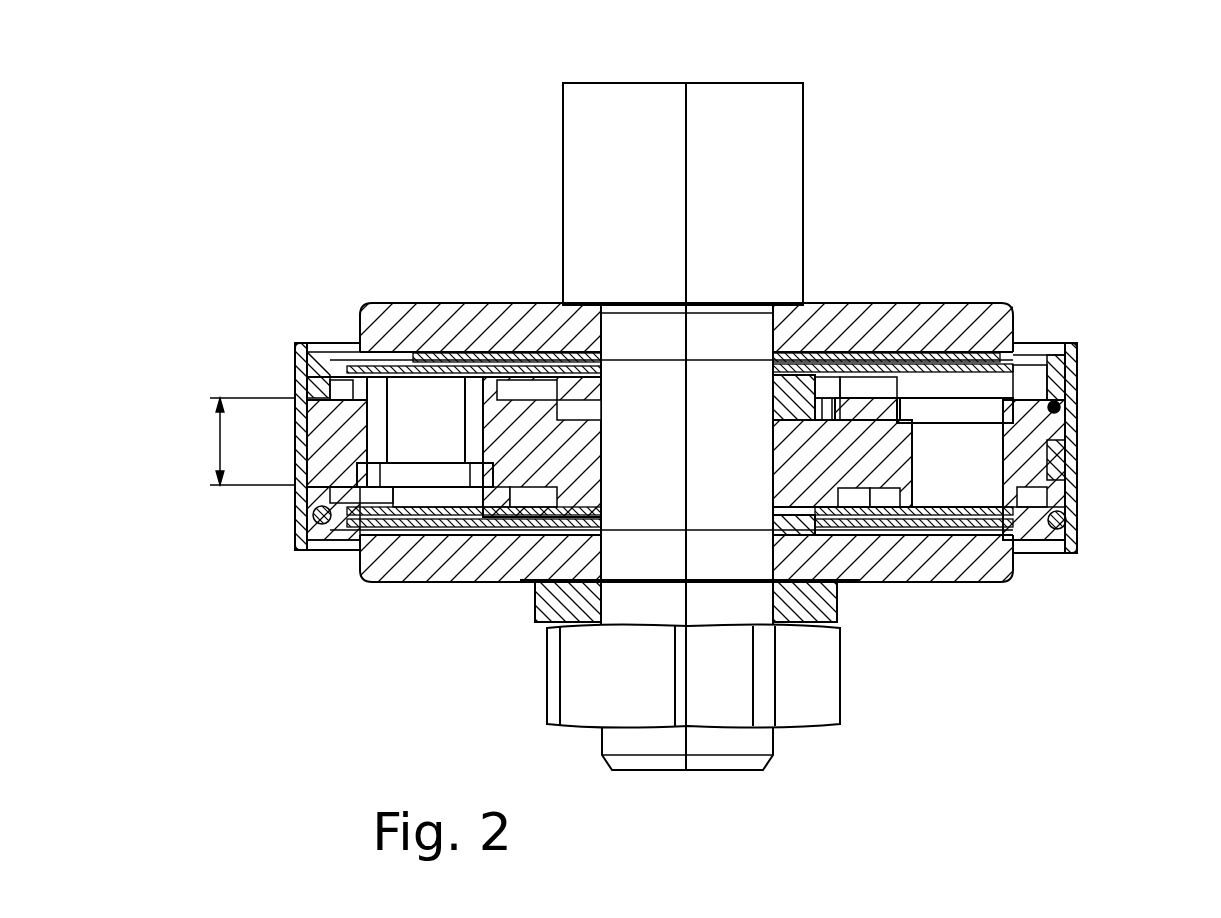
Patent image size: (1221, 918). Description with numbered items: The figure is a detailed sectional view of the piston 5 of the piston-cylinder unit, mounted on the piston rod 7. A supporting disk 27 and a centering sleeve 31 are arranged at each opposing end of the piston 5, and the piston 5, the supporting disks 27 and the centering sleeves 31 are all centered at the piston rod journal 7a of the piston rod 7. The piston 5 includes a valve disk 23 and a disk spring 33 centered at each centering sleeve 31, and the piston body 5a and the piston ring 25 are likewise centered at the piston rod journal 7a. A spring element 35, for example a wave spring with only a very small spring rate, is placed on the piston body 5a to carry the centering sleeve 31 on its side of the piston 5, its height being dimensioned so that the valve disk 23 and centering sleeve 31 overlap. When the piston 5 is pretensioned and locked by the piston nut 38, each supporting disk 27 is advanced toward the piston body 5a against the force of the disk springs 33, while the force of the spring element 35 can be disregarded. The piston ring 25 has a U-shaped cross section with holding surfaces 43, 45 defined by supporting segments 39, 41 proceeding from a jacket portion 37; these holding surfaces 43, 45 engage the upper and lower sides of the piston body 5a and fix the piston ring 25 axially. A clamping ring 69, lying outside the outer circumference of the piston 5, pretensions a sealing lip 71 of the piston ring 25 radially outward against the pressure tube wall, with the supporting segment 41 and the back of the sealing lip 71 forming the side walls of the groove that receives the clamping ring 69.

The piston 5 is at (360, 689).
The piston body 5a is at (523, 457).
The piston rod 7 is at (750, 112).
The piston rod journal 7a is at (627, 603).
The valve disk 23 is at (1030, 362).
The piston ring 25 is at (1106, 433).
The supporting disk 27 is at (980, 325).
The centering sleeve 31 is at (808, 362).
The disk spring 33 is at (445, 360).
The spring element 35 is at (517, 580).
The jacket portion 37 is at (215, 446).
The piston nut 38 is at (827, 696).
The supporting segment 39 is at (293, 345).
The supporting segment 41 is at (297, 506).
The holding surface 43 is at (1080, 413).
The holding surface 45 is at (1080, 465).
The clamping ring 69 is at (1080, 520).
The sealing lip 71 is at (297, 552).